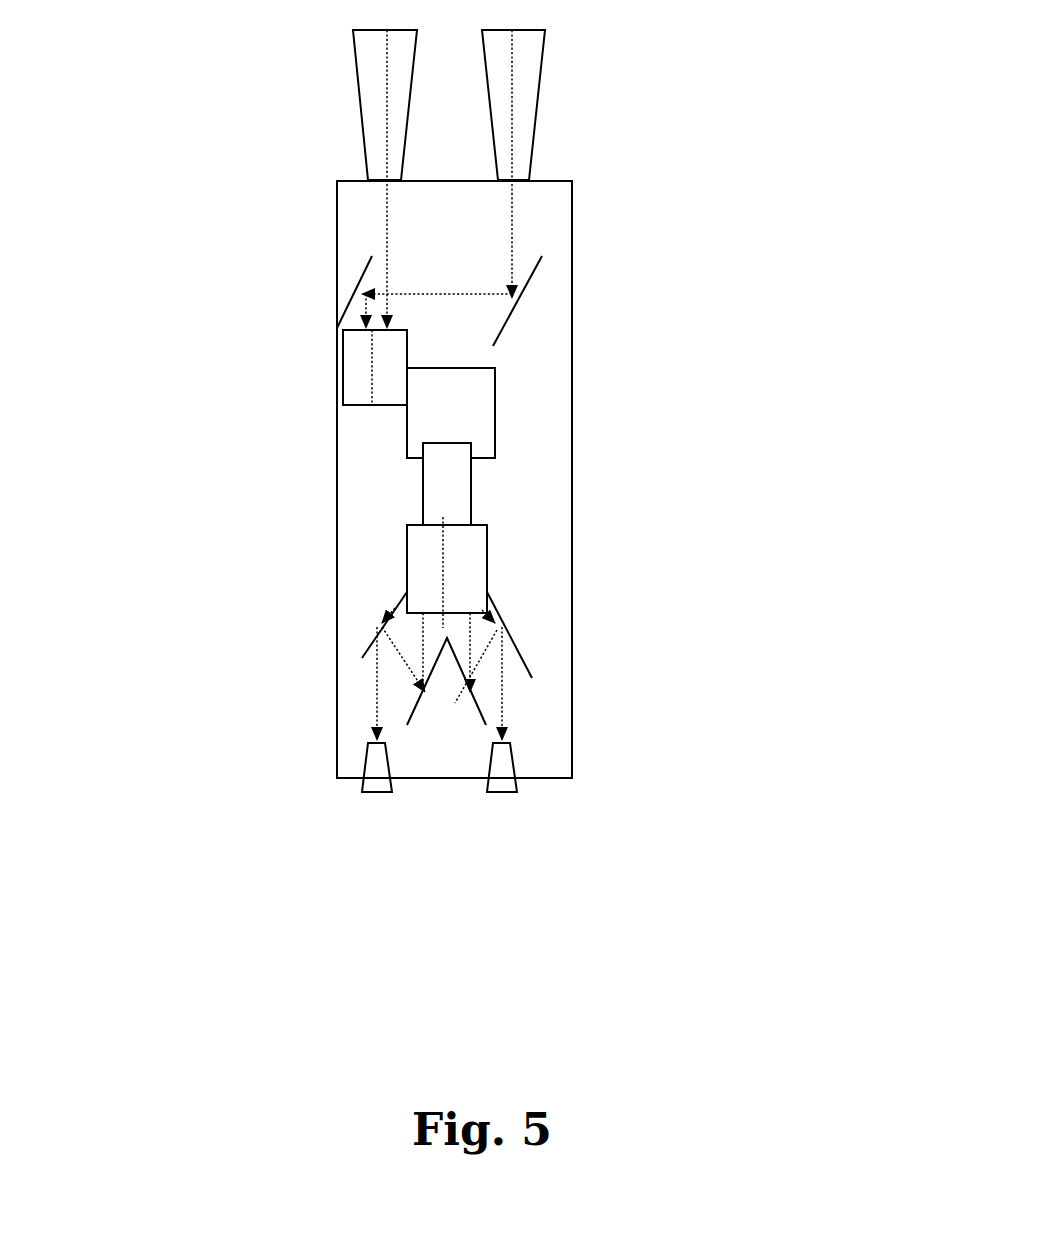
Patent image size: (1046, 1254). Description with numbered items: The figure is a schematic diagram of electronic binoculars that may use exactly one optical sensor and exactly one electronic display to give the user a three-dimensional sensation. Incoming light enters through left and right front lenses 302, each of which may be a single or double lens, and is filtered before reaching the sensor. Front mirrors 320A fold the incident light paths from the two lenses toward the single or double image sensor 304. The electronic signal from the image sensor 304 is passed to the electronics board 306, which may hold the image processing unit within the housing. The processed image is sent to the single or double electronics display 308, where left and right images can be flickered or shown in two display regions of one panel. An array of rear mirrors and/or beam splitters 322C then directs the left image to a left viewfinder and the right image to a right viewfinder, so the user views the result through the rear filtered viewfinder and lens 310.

The front lens 302 is at (523, 78).
The front mirror(s) 320A is at (548, 262).
The image sensor 304 is at (407, 331).
The electronics board 306 is at (425, 405).
The electronic display 308 is at (407, 567).
The rear mirrors and/or beam splitters 322C is at (517, 628).
The rear viewfinder and lens 310 is at (503, 770).